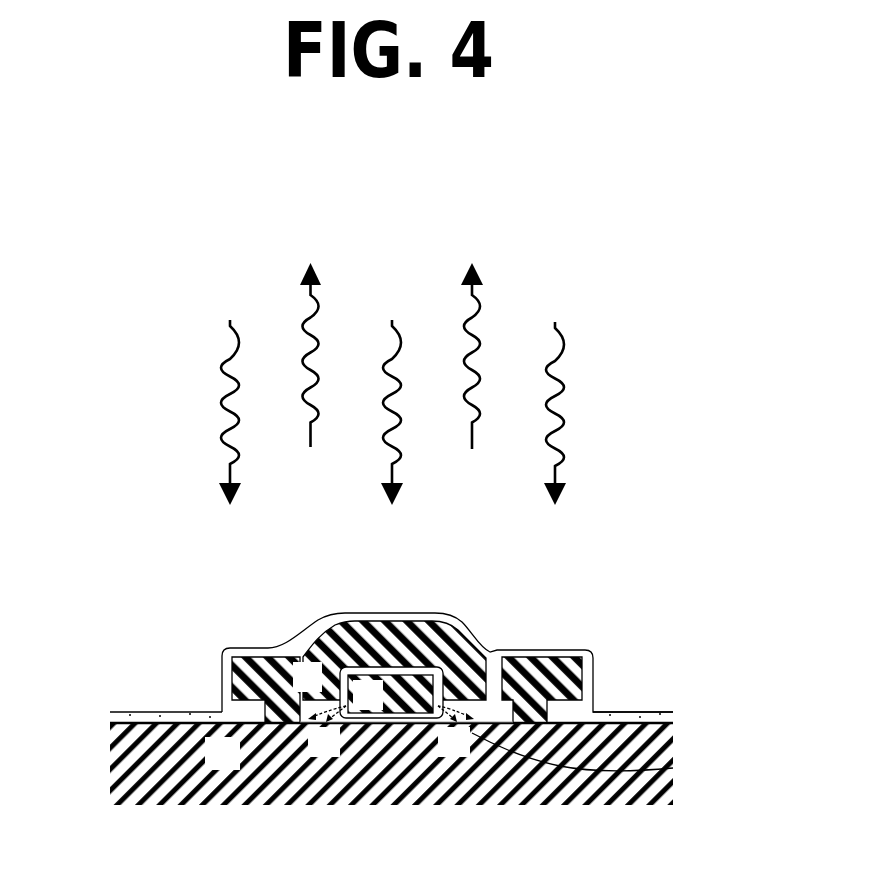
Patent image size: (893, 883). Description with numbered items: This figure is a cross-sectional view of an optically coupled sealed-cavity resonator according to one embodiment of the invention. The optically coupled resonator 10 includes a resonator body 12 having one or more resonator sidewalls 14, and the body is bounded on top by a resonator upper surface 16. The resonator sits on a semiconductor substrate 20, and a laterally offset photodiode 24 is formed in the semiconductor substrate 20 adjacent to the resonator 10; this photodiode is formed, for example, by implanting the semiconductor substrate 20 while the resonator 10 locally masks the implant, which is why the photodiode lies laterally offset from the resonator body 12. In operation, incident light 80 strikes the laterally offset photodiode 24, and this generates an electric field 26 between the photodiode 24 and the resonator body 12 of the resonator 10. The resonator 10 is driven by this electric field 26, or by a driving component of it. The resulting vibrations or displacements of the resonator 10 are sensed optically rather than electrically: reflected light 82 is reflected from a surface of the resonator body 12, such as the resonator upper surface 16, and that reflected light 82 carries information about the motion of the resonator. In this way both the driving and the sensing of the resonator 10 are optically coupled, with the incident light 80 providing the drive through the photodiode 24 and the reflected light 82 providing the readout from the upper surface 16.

The optically coupled resonator 10 is at (166, 560).
The resonator body 12 is at (396, 700).
The resonator sidewall 14 is at (447, 672).
The resonator upper surface 16 is at (363, 678).
The semiconductor substrate 20 is at (673, 740).
The laterally offset photodiode 24 is at (673, 768).
The electric field 26 is at (423, 725).
The incident light 80 is at (562, 453).
The reflected light 82 is at (482, 307).